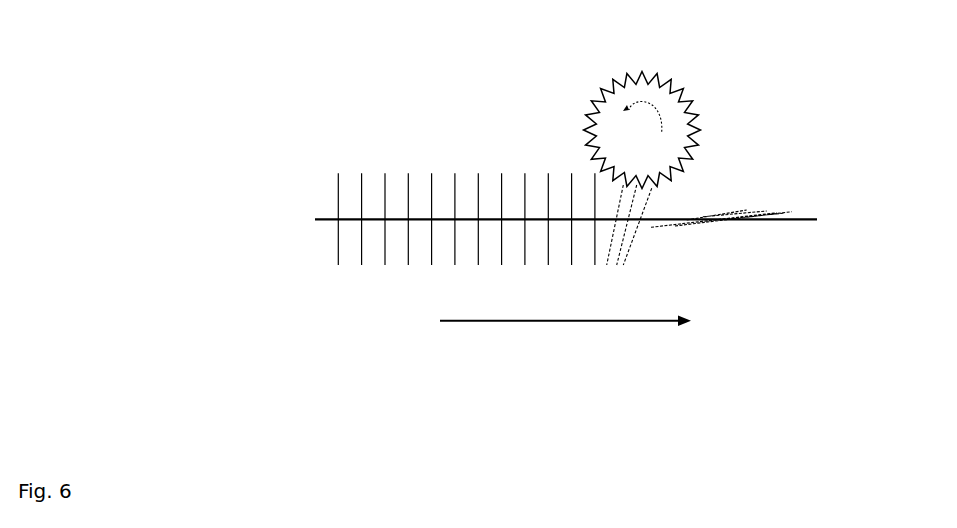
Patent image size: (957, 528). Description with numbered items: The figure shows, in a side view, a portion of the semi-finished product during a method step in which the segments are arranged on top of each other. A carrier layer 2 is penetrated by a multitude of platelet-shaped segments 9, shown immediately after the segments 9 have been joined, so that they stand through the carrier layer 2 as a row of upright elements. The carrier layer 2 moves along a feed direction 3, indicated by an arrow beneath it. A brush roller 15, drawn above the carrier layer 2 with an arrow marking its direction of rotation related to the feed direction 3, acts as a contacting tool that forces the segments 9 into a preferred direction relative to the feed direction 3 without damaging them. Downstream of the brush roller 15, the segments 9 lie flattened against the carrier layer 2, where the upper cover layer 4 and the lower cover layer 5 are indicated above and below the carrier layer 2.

The carrier layer 2 is at (315, 219).
The feed direction of the carrier layer 3 is at (440, 321).
The upper cover layer 4 is at (790, 212).
The lower cover layer 5 is at (700, 227).
The platelet-shaped segment 9 is at (478, 173).
The brush roller 15 is at (683, 90).